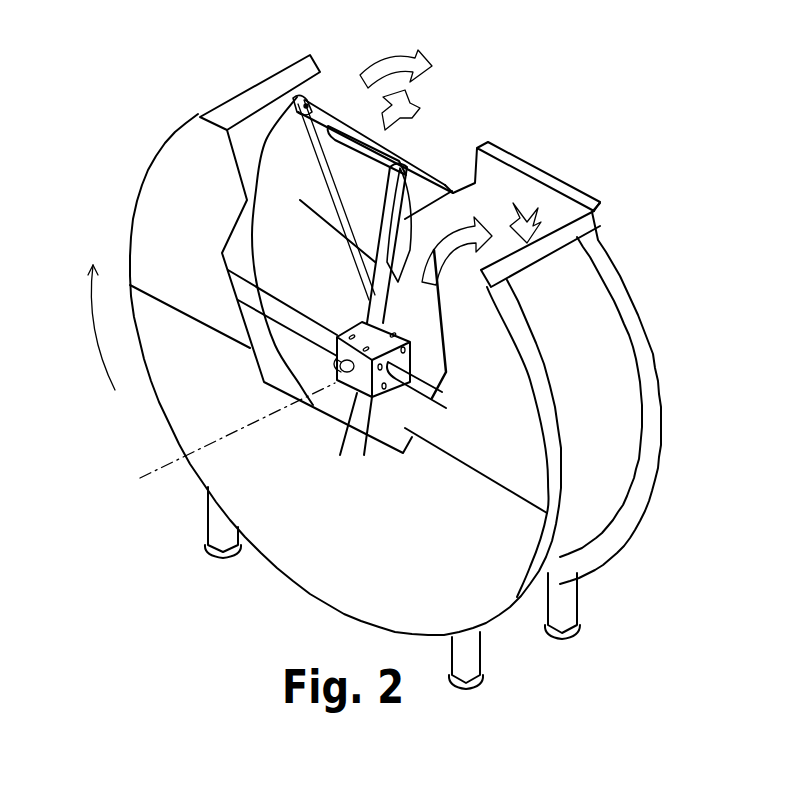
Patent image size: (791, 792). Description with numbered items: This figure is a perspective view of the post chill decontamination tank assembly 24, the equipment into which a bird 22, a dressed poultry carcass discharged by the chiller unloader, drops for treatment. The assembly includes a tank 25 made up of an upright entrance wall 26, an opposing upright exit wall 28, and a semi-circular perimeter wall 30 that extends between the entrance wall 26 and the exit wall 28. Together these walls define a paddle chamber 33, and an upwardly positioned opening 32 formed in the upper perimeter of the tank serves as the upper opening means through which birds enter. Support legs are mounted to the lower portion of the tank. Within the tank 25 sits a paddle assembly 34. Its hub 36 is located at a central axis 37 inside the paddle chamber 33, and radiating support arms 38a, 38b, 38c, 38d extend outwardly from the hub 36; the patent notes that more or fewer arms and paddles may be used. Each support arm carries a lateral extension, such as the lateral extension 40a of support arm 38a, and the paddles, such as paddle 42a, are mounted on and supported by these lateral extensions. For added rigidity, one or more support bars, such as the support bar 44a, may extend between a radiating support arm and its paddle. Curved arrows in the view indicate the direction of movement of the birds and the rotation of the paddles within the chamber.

The bird 22 is at (413, 108).
The post chill decontamination tank assembly 24 is at (126, 106).
The tank 25 is at (136, 172).
The upright entrance wall 26 is at (323, 580).
The upright exit wall 28 is at (517, 182).
The semi-circular perimeter wall 30 is at (604, 328).
The upwardly positioned opening 32 is at (453, 153).
The paddle chamber 33 is at (284, 254).
The paddle assembly 34 is at (338, 315).
The hub 36 is at (390, 390).
The central axis 37 is at (253, 417).
The radiating support arm 38a is at (395, 303).
The radiating support arm 38b is at (317, 333).
The radiating support arm 38c is at (357, 414).
The radiating support arm 38d is at (427, 377).
The lateral extension 40a is at (350, 146).
The paddle 42a is at (308, 104).
The support bar 44a is at (345, 235).